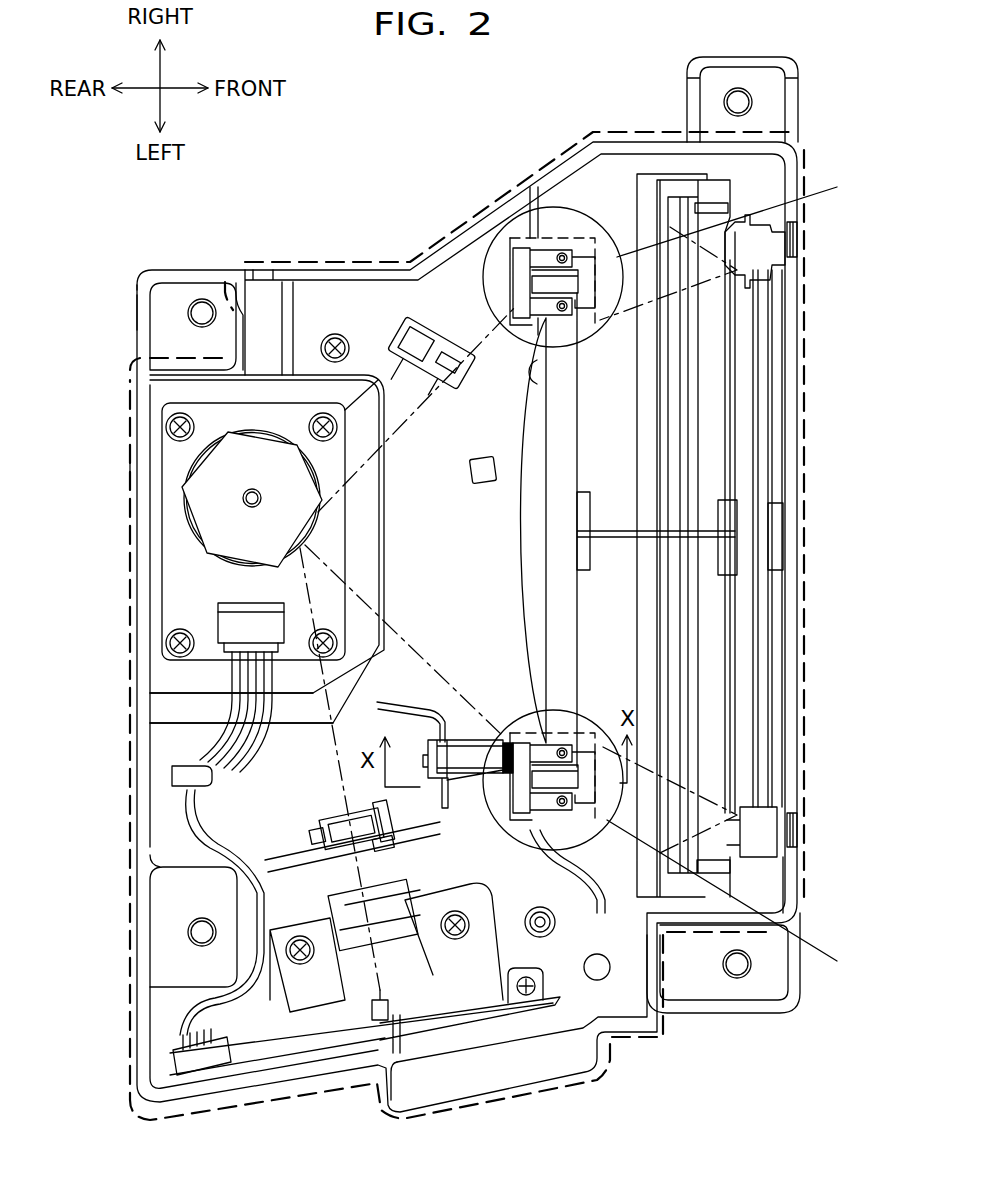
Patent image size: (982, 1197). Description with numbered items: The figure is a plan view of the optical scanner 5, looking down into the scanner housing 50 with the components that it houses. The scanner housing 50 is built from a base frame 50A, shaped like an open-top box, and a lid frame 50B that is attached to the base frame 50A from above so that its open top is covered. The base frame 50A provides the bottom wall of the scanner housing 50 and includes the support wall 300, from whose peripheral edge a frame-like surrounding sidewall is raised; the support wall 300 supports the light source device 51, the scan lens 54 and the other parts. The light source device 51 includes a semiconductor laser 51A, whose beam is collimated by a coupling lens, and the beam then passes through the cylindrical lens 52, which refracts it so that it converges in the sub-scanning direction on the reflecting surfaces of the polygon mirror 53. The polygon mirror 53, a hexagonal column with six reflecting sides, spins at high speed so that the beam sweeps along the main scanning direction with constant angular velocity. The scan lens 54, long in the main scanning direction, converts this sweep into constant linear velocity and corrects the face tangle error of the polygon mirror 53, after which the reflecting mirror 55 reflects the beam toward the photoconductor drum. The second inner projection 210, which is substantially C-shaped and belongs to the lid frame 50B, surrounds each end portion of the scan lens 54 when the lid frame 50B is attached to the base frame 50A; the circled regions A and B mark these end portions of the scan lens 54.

The optical scanner 5 is at (347, 163).
The scanner housing 50 is at (73, 345).
The base frame 50A is at (128, 316).
The lid frame 50B is at (123, 458).
The light source device 51 is at (266, 1030).
The semiconductor laser 51A is at (380, 1023).
The cylindrical lens 52 is at (350, 817).
The polygon mirror 53 is at (188, 517).
The scan lens 54 is at (594, 415).
The reflecting mirror 55 is at (752, 455).
The second inner projection 210 is at (470, 230).
The support wall 300 is at (349, 298).
The section line A is at (837, 187).
The section line B is at (837, 961).